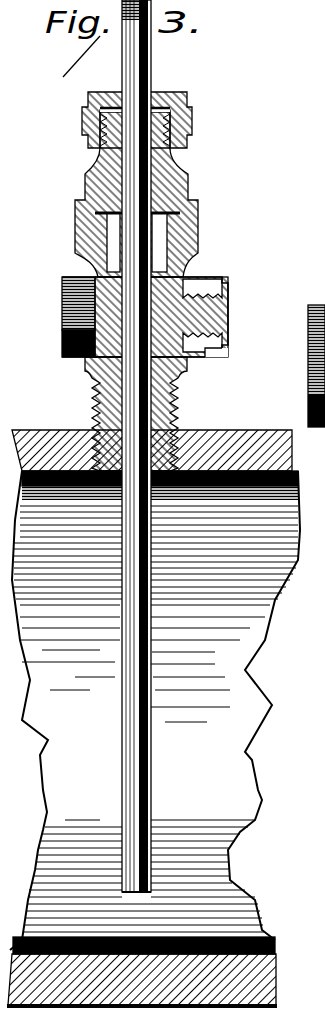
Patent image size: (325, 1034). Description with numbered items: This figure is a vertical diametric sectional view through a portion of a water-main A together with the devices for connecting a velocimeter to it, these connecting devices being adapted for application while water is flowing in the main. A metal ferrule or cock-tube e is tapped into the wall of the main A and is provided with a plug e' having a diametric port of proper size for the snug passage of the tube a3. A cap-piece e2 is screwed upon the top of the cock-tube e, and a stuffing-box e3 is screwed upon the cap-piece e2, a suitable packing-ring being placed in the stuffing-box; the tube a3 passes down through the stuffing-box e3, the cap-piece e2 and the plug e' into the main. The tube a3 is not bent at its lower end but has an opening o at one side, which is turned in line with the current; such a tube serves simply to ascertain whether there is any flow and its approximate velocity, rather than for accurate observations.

The stuffing-box e3 is at (187, 98).
The cap-piece e2 is at (86, 176).
The plug e' is at (145, 317).
The metal ferrule or cock-tube e is at (137, 414).
The tube a3 is at (151, 589).
The water-main A is at (153, 718).
The opening o is at (122, 878).